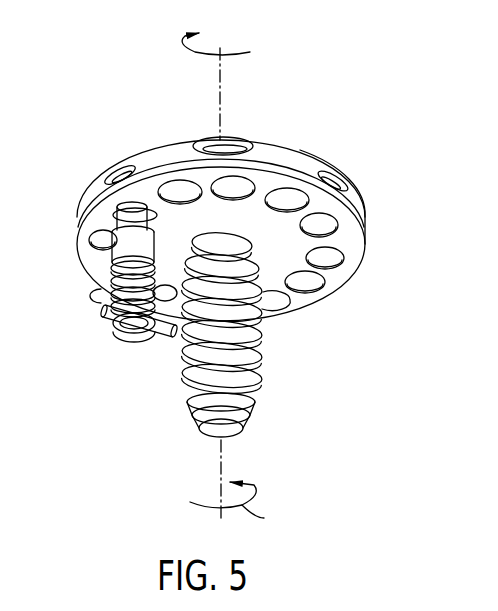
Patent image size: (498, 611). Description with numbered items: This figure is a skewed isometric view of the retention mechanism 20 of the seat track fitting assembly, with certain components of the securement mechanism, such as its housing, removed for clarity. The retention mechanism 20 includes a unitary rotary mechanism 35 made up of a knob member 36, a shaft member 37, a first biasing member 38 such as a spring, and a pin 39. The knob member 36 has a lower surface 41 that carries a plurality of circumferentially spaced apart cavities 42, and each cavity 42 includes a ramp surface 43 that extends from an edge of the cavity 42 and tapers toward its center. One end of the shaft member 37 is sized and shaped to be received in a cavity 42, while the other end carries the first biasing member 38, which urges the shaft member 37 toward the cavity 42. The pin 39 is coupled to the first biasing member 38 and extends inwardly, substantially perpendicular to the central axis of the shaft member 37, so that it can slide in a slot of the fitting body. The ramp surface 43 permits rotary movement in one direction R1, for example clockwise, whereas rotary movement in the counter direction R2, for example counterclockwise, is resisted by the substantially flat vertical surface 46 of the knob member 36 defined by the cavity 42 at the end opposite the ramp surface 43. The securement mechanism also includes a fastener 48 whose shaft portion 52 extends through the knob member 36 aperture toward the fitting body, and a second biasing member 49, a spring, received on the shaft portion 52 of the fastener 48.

The retention mechanism 20 is at (340, 90).
The unitary rotary mechanism 35 is at (83, 192).
The knob member 36 is at (353, 211).
The shaft member 37 is at (110, 256).
The first biasing member 38 is at (120, 338).
The pin 39 is at (167, 347).
The lower surface 41 is at (294, 266).
The cavities 42 is at (143, 203).
The ramp surface 43 is at (292, 203).
The substantially flat vertical surface 46 is at (172, 190).
The fastener 48 is at (220, 351).
The second biasing member 49 is at (262, 370).
The shaft portion 52 is at (217, 435).
The rotary direction R1 is at (264, 518).
The counter rotary direction R2 is at (193, 54).